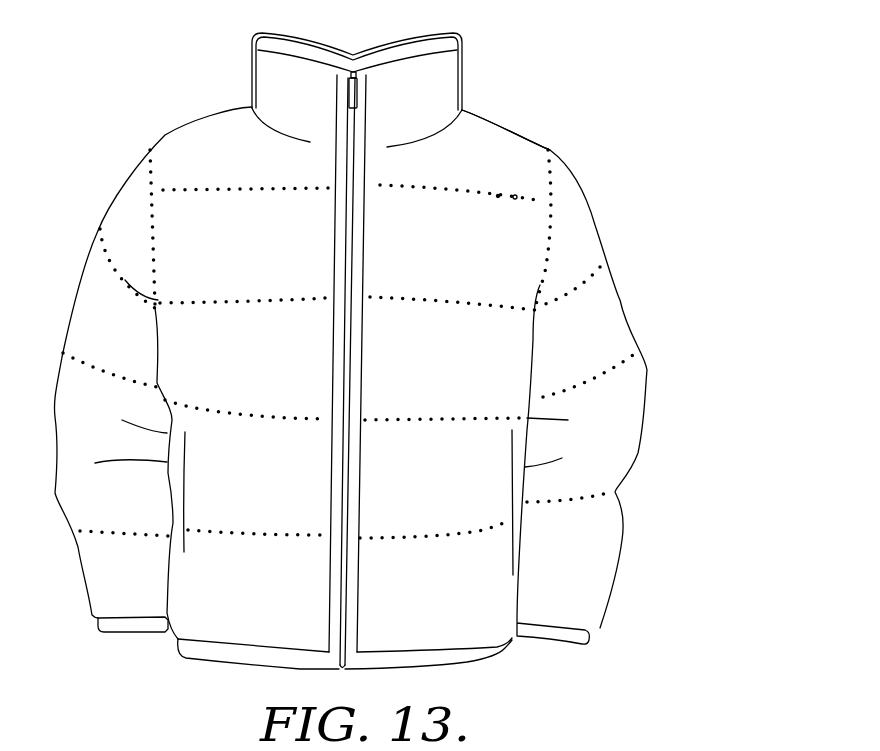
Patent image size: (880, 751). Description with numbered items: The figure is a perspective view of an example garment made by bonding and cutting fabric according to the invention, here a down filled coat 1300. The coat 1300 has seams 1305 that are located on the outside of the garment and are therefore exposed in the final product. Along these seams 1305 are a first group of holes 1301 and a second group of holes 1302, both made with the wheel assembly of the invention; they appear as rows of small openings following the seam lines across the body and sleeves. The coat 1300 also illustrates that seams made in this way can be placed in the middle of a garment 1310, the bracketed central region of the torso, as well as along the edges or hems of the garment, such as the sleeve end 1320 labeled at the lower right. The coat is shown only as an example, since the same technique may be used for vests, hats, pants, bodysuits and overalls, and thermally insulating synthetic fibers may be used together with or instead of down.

The down filled coat 1300 is at (83, 118).
The first group of holes 1301 is at (447, 185).
The second group of holes 1302 is at (527, 202).
The seams 1305 is at (475, 150).
The middle of a garment 1310 is at (667, 531).
The cuff 1320 is at (592, 634).